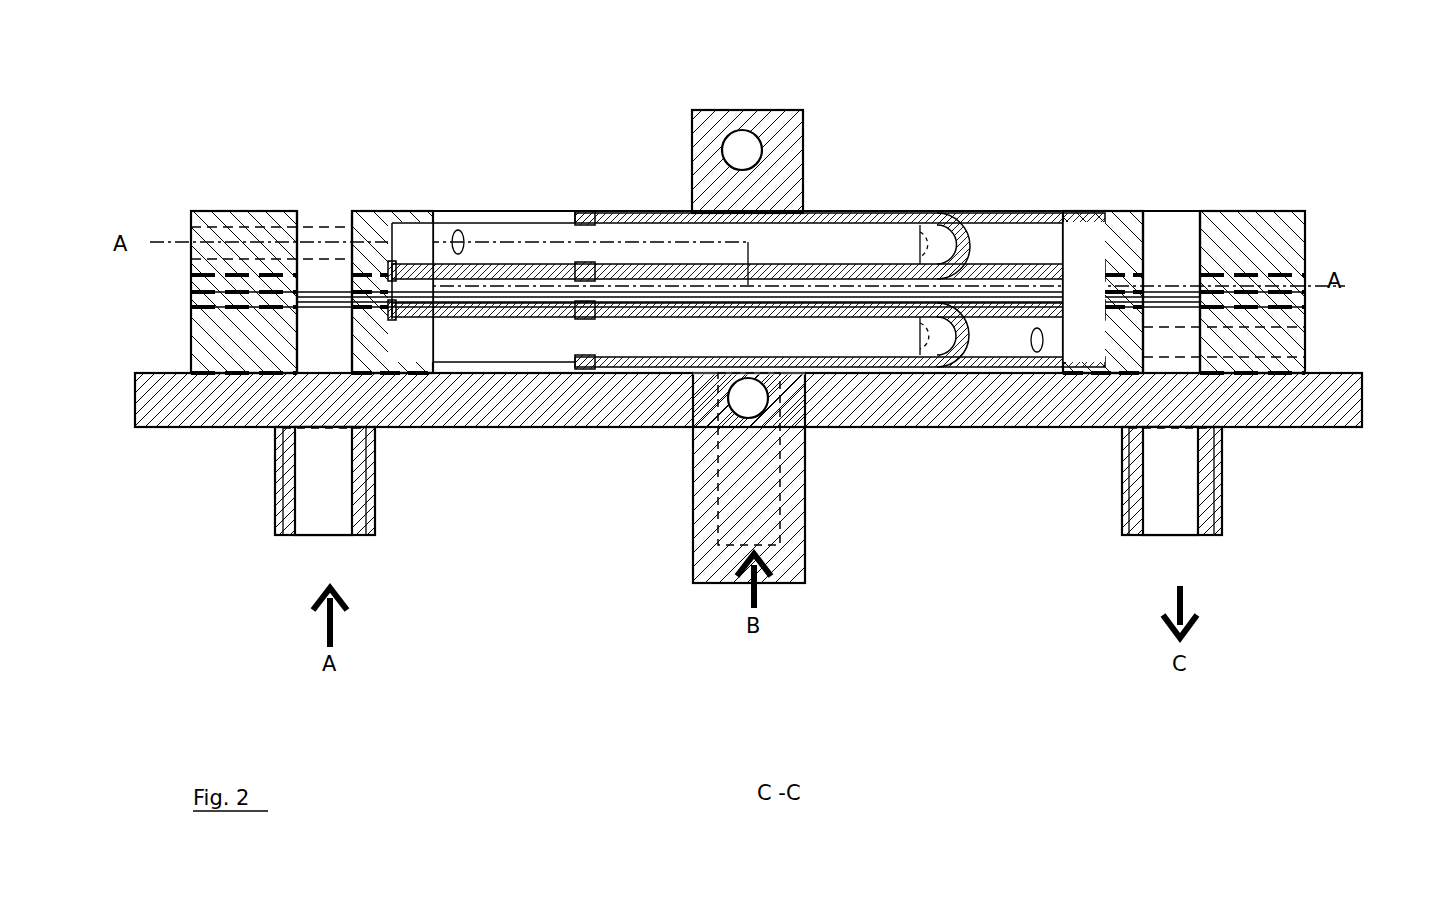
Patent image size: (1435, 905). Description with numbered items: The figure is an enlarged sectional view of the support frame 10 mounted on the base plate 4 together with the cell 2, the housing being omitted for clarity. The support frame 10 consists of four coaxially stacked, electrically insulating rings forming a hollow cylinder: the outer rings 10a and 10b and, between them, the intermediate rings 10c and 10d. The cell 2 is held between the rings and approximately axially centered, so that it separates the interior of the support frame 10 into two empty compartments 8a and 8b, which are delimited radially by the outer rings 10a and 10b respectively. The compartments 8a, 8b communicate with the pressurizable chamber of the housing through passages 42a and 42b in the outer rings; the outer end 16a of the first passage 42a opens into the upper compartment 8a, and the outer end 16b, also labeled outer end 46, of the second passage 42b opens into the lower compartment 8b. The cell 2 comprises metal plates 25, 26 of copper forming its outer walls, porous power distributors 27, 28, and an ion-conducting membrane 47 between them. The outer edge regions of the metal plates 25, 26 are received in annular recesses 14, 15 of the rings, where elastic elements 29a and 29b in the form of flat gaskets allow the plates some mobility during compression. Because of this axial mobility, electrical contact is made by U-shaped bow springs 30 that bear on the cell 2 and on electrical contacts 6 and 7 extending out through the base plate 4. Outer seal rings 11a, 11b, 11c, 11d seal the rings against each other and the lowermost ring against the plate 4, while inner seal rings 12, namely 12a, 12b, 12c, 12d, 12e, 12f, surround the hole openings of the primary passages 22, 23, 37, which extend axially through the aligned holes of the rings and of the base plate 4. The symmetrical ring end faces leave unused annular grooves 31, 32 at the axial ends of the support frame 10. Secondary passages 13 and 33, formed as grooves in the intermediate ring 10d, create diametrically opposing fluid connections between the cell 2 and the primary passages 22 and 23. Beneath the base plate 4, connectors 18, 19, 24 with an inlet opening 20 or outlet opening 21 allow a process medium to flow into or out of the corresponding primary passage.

The cell 2 is at (524, 265).
The plate 4 is at (178, 410).
The electrical contact 6 is at (735, 56).
The electrical contact 7 is at (706, 560).
The upper compartment 8a is at (876, 242).
The lower compartment 8b is at (902, 338).
The support frame 10 is at (168, 205).
The outer ring 10a is at (207, 230).
The outer ring 10b is at (207, 348).
The intermediate ring 10c is at (207, 276).
The intermediate ring 10d is at (207, 300).
The outer seal ring 11a is at (327, 535).
The outer seal ring 11b is at (1262, 308).
The outer seal ring 11c is at (1255, 292).
The outer seal ring 11d is at (1262, 276).
The inner seal rings 12 is at (1252, 292).
The inner seal ring 12a is at (1222, 376).
The inner seal ring 12b is at (1230, 303).
The inner seal ring 12c is at (1228, 284).
The inner seal ring 12d is at (1223, 268).
The inner seal ring 12e is at (276, 272).
The inner seal ring 12f is at (372, 385).
The individual passage 13 is at (397, 273).
The annular recess 14 is at (383, 215).
The annular recess 15 is at (385, 415).
The outer end of first passage 16a is at (461, 224).
The outer end of second passage 16b is at (1035, 328).
The connector 18 is at (312, 572).
The connector 19 is at (1213, 522).
The inlet opening 20 is at (298, 598).
The outlet opening 21 is at (1180, 552).
The primary passage 22 is at (315, 573).
The primary passage 23 is at (1195, 485).
The connector 24 is at (798, 498).
The metal plate 25 is at (572, 270).
The metal plate 26 is at (731, 157).
The power distributor 27 is at (612, 292).
The power distributor 28 is at (640, 303).
The elastic element 29a is at (392, 258).
The elastic element 29b is at (397, 330).
The springs 30 is at (749, 322).
The annular groove 31 is at (1126, 337).
The annular groove 32 is at (405, 216).
The individual passage 33 is at (1104, 302).
The primary passage 37 is at (740, 477).
The first passage 42a is at (242, 241).
The second passage 42b is at (1127, 385).
The outer end of second passage 46 is at (1272, 342).
The membrane 47 is at (478, 292).